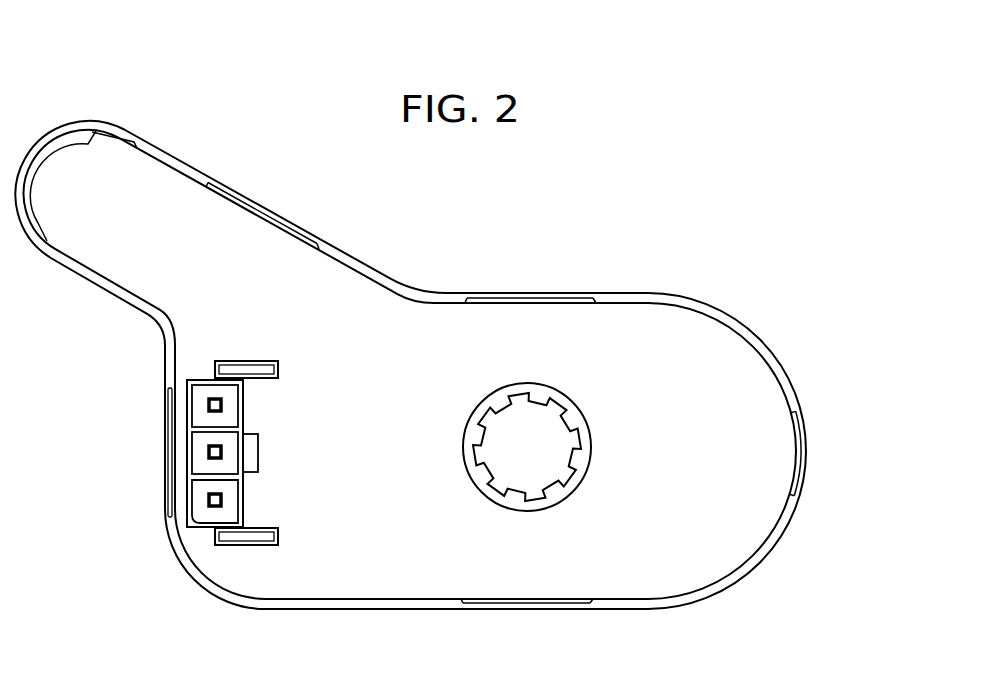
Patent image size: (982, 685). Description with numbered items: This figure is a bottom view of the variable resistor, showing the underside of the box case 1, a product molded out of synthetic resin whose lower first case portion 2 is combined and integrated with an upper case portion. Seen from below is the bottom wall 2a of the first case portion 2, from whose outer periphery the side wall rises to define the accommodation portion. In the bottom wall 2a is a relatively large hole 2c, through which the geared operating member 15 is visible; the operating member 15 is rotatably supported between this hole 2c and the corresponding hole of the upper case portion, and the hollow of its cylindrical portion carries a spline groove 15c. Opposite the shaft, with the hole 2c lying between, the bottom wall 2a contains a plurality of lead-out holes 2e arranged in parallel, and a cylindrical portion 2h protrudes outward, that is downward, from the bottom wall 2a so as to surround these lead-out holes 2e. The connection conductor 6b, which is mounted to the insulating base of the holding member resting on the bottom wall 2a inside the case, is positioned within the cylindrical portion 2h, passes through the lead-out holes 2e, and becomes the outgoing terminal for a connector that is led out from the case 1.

The box case 1 is at (436, 396).
The first case portion 2 is at (436, 396).
The bottom wall 2a is at (750, 318).
The hole 2c is at (585, 392).
The lead-out holes 2e is at (208, 392).
The cylindrical portion 2h is at (187, 495).
The connection conductor 6b is at (205, 404).
The geared operating member 15 is at (556, 388).
The spline groove 15c is at (513, 390).